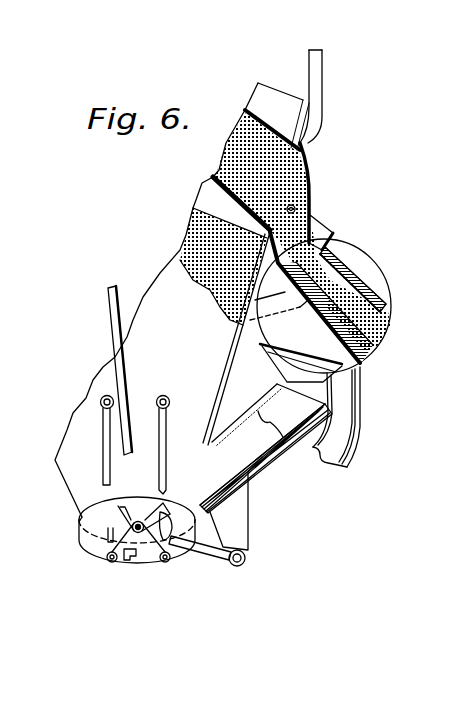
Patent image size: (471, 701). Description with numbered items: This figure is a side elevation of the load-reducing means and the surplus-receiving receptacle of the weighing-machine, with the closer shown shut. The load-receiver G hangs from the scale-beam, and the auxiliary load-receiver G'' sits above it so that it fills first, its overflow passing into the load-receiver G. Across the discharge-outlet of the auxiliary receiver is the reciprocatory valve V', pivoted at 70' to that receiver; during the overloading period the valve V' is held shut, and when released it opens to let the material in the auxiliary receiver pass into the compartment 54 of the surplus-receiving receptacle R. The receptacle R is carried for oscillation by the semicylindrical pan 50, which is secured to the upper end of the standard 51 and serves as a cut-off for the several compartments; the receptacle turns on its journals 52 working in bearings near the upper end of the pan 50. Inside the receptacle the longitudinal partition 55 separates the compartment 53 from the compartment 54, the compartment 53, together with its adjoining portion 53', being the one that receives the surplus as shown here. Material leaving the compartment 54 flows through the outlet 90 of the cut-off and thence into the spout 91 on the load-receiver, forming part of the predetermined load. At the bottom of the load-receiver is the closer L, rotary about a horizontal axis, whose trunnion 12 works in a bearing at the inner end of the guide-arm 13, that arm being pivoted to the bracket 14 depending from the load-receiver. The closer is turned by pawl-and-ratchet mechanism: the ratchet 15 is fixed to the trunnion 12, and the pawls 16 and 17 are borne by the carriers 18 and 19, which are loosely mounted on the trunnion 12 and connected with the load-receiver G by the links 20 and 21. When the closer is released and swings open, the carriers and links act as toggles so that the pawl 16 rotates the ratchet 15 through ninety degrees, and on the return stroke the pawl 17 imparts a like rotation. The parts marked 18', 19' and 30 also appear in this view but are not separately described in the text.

The load-receiver G is at (222, 300).
The feed chute G'' is at (314, 146).
The valve pivot 70' is at (316, 199).
The valve V' is at (326, 229).
The surplus-receiving receptacle R is at (325, 306).
The compartment 53 is at (355, 269).
The rotor blade 53' is at (369, 279).
The longitudinal partition 55 is at (305, 294).
The pivot or journal 52 is at (300, 310).
The semicylindrical pan 50 is at (382, 331).
The compartment 54 is at (280, 325).
The outlet of the cut-off 90 is at (292, 375).
The standard 51 is at (352, 427).
The spout 91 is at (283, 442).
The agitator rod 30 is at (117, 357).
The link 20 is at (105, 433).
The link 21 is at (179, 428).
The trunnion 12 is at (139, 521).
The pawl-carrier 19 is at (176, 510).
The ribbed rail 19' is at (261, 460).
The lever stop 18' is at (59, 517).
The closer L is at (125, 530).
The pawl 16 is at (110, 542).
The pawl-carrier 18 is at (101, 572).
The ratchet 15 is at (130, 560).
The pawl 17 is at (167, 560).
The guide-arm 13 is at (223, 558).
The bracket 14 is at (248, 512).